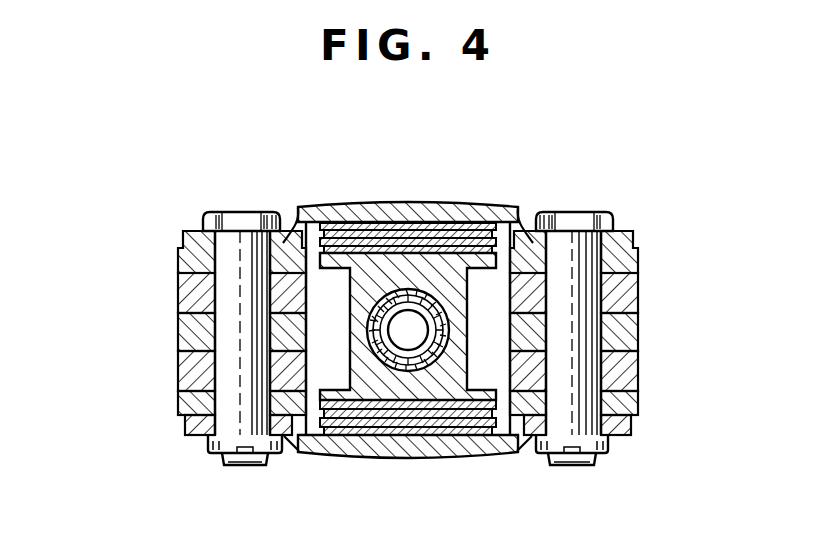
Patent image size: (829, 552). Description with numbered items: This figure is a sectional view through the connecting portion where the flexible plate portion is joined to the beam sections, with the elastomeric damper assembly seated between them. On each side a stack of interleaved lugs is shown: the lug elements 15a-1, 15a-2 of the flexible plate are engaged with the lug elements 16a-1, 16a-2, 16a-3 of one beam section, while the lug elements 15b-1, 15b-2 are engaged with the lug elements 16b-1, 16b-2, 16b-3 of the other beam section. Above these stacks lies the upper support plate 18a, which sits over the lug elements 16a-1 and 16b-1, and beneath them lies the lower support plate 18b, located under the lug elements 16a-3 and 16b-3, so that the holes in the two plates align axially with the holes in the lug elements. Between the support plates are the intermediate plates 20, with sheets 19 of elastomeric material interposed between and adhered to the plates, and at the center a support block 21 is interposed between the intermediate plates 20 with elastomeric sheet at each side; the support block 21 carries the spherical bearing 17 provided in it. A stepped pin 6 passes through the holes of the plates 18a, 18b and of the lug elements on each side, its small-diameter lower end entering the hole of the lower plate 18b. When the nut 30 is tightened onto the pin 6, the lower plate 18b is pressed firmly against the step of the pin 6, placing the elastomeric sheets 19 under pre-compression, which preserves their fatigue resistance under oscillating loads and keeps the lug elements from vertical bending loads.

The pin 6 is at (247, 210).
The lug element 15a-1 is at (185, 292).
The lug element 15a-2 is at (182, 372).
The lug element 15b-1 is at (633, 287).
The lug element 15b-2 is at (637, 370).
The lug element 16a-1 is at (180, 260).
The lug element 16a-2 is at (185, 336).
The lug element 16a-3 is at (180, 403).
The lug element 16b-1 is at (633, 250).
The lug element 16b-2 is at (633, 330).
The lug element 16b-3 is at (637, 400).
The spherical bearing 17 is at (368, 372).
The upper support plate 18a is at (300, 205).
The lower support plate 18b is at (307, 460).
The sheet of elastomeric material 19 is at (433, 235).
The intermediate plate 20 is at (378, 240).
The support block 21 is at (433, 387).
The nut 30 is at (572, 466).